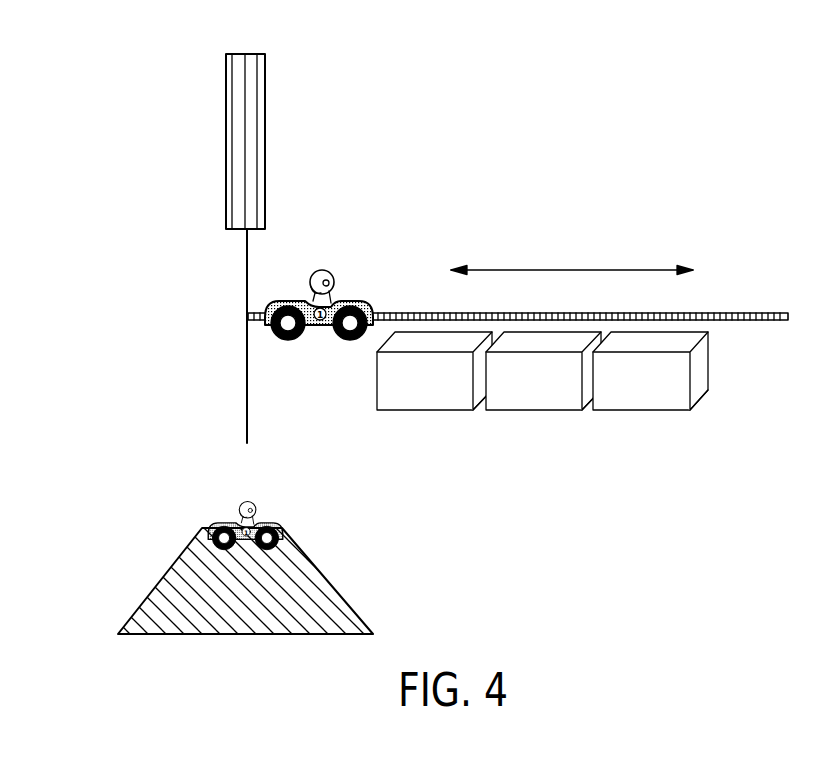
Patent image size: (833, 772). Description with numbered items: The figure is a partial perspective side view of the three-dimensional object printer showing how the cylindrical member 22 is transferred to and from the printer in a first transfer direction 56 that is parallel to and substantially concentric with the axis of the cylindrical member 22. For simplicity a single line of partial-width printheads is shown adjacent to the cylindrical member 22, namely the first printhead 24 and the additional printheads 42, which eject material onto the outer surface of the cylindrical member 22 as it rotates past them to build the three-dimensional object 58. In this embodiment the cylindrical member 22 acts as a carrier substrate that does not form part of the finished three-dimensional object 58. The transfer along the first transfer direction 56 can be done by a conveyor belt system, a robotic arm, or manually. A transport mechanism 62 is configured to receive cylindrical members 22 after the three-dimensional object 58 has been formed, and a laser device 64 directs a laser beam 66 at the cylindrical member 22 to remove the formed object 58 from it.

The cylindrical member 22 is at (760, 300).
The first printhead 24 is at (630, 410).
The additional printheads 42 is at (413, 410).
The first transfer direction 56 is at (592, 270).
The three-dimensional object 58 is at (319, 270).
The transport mechanism 62 is at (342, 598).
The laser device 64 is at (226, 167).
The laser beam 66 is at (246, 361).